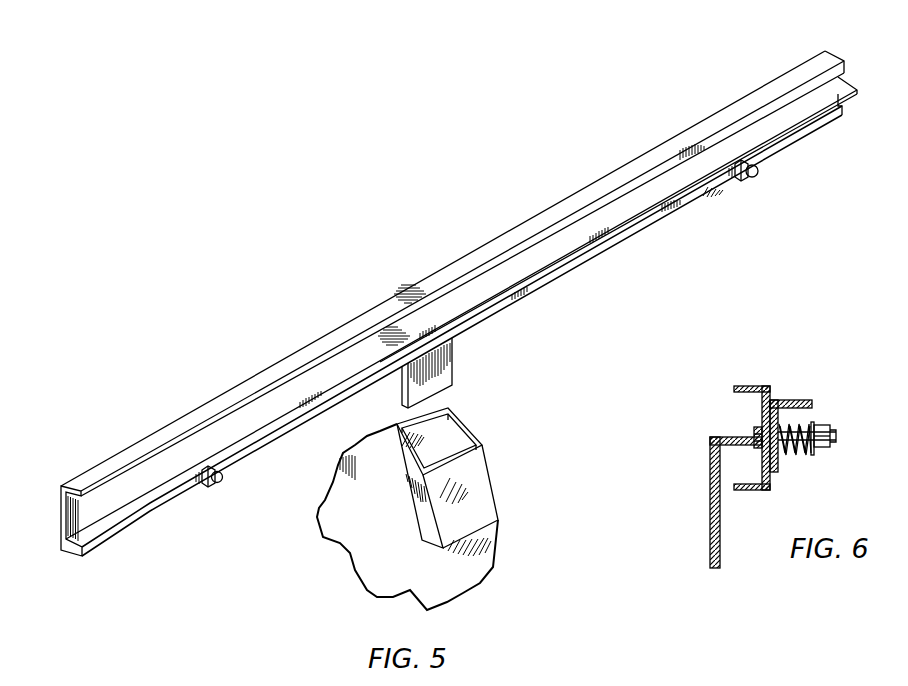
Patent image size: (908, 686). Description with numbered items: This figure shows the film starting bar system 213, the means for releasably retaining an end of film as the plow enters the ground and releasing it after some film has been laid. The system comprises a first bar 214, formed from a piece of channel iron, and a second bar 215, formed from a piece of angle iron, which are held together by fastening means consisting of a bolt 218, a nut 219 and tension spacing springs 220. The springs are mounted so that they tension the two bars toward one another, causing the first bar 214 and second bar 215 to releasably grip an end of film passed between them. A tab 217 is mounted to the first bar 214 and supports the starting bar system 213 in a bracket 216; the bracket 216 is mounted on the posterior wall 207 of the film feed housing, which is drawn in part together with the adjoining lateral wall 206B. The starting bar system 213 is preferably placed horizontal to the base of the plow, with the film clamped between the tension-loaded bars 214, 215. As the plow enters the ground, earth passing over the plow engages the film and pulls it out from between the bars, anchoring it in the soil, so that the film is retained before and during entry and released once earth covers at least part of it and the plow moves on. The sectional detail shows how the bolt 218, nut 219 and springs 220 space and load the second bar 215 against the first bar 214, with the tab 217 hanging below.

In FIG. 5, the film starting bar system 213 is at (628, 283).
In FIG. 5, the first bar 214 is at (122, 460).
In FIG. 6, the first bar 214 is at (748, 384).
In FIG. 5, the second bar 215 is at (216, 436).
In FIG. 6, the second bar 215 is at (784, 398).
In FIG. 5, the bracket 216 is at (481, 468).
In FIG. 5, the tab 217 is at (452, 372).
In FIG. 6, the tab 217 is at (712, 520).
In FIG. 6, the bolt 218 is at (755, 428).
In FIG. 5, the nut 219 is at (209, 487).
In FIG. 6, the nut 219 is at (830, 431).
In FIG. 6, the tension spacing springs 220 is at (800, 424).
In FIG. 5, the lateral wall 206B is at (401, 513).
In FIG. 5, the posterior wall 207 is at (474, 581).